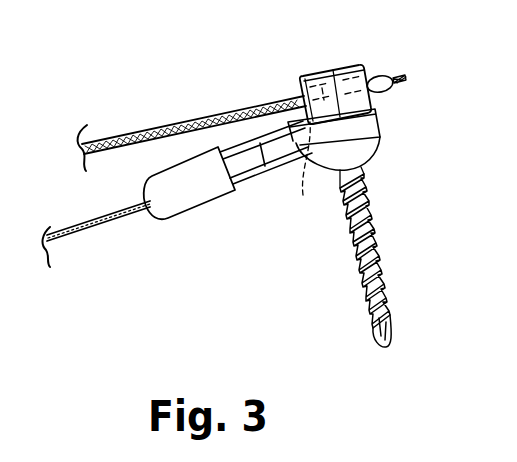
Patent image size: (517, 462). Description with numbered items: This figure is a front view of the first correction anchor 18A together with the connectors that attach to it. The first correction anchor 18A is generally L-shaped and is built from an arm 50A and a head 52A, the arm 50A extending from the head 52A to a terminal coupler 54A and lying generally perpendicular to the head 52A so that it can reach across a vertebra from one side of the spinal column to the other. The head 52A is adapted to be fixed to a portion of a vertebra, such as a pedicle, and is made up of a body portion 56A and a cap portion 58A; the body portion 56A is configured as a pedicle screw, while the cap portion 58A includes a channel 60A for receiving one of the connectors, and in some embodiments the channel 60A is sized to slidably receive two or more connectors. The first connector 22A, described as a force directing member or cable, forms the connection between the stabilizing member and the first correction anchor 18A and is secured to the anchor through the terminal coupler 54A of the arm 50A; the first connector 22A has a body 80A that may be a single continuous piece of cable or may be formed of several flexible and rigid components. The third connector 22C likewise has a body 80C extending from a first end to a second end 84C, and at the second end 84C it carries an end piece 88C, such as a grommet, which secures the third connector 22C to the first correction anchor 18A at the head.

The first correction anchor 18A is at (291, 73).
The first connector 22A is at (97, 218).
The third connector 22C is at (146, 132).
The arm 50A is at (265, 170).
The head 52A is at (358, 64).
The terminal coupler 54A is at (153, 222).
The body portion 56A is at (374, 207).
The cap portion 58A is at (334, 66).
The channel 60A is at (307, 169).
The body 80A is at (60, 243).
The body 80C is at (232, 110).
The second end 84C is at (395, 86).
The end piece 88C is at (383, 92).